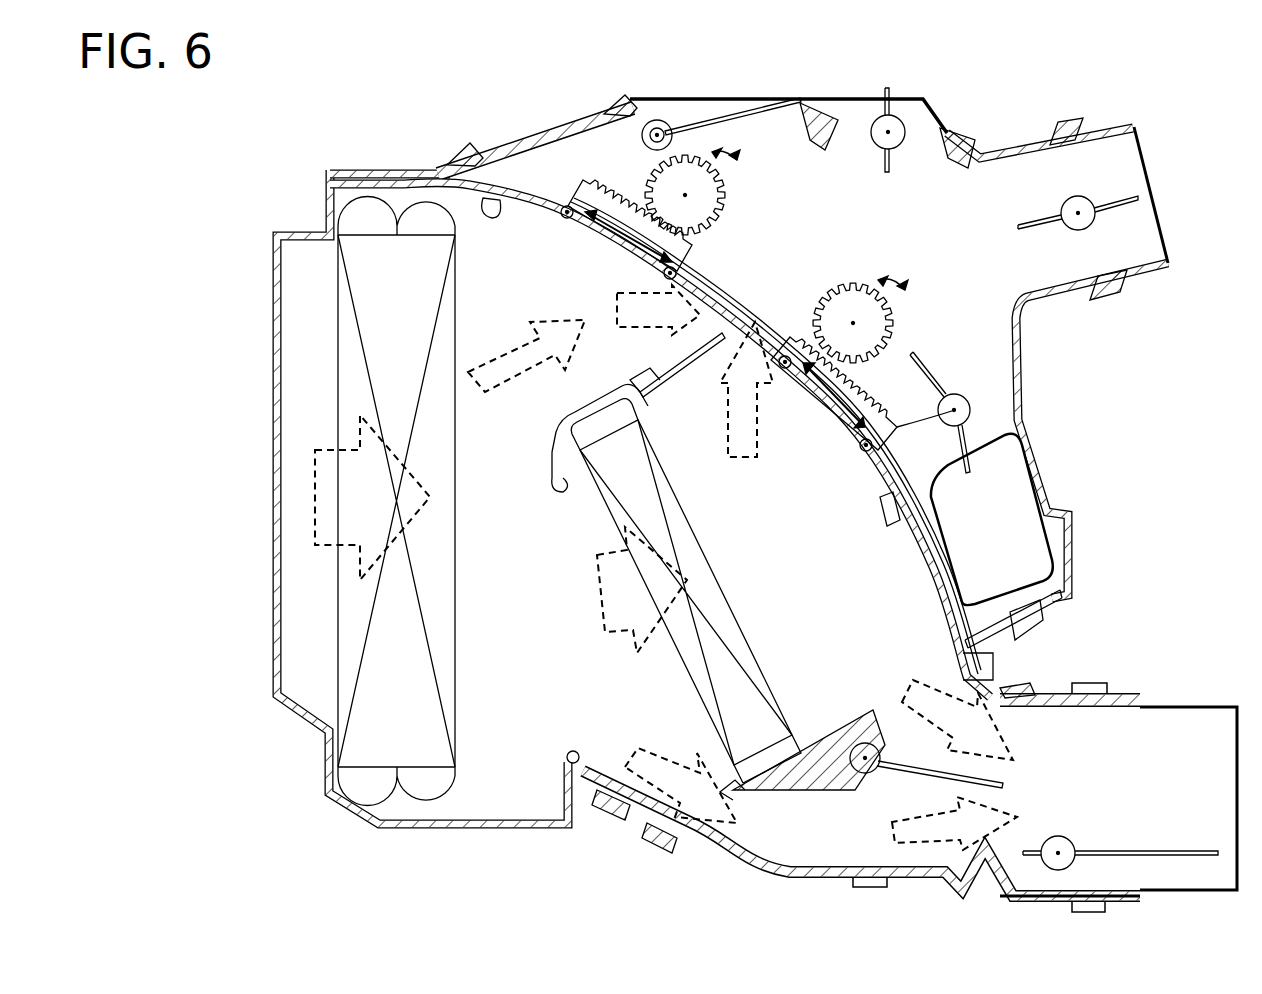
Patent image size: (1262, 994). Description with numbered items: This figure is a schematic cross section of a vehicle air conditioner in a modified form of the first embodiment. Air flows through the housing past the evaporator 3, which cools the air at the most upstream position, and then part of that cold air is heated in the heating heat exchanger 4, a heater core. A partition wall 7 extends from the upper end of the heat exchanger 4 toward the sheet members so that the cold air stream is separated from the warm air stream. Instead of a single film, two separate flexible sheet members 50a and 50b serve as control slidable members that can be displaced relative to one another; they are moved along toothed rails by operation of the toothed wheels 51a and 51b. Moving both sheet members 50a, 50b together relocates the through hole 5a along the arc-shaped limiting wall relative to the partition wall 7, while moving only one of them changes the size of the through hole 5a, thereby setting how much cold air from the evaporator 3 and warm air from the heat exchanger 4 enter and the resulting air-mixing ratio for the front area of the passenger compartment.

The evaporator 3 is at (377, 313).
The heating heat exchanger 4 is at (748, 653).
The through hole 5a is at (757, 315).
The partition wall 7 is at (680, 367).
The flexible sheet member 50a is at (576, 208).
The toothed wheel 51a is at (685, 175).
The flexible sheet member 50b is at (967, 403).
The toothed wheel 51b is at (873, 322).